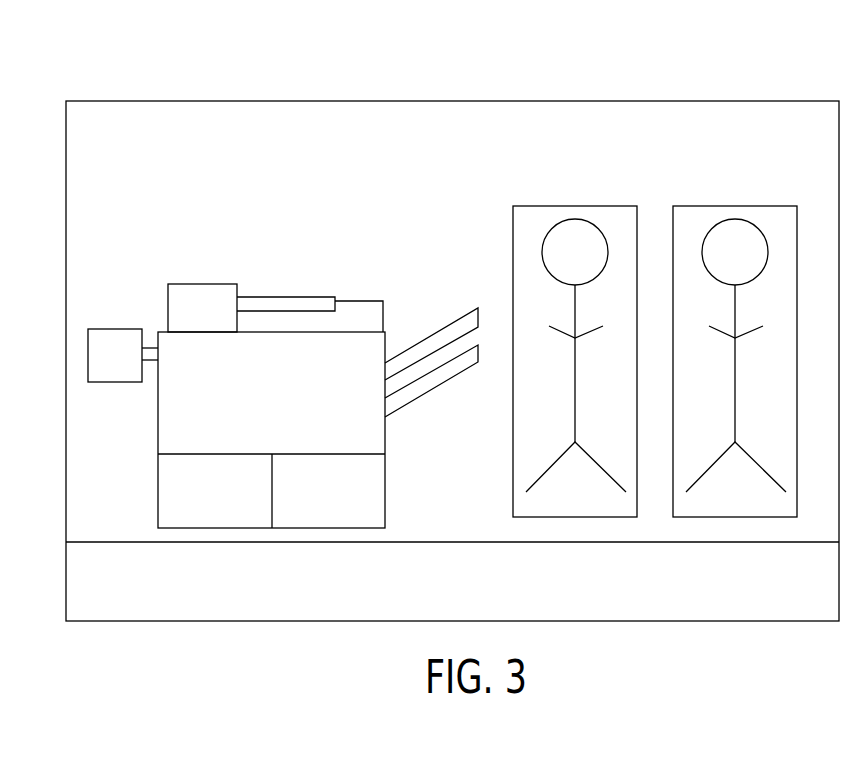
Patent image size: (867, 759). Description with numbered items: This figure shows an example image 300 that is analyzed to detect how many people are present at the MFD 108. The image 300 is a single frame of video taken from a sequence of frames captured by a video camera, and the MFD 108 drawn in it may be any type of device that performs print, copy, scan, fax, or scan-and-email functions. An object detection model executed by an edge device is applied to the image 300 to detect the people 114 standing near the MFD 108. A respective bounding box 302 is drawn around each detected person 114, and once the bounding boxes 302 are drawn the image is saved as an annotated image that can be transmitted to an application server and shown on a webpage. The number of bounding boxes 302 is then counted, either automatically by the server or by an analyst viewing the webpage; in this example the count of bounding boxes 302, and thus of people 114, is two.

The image 300 is at (452, 330).
The MFD 108 is at (283, 373).
The bounding box 302 is at (655, 329).
The people 114 is at (656, 316).